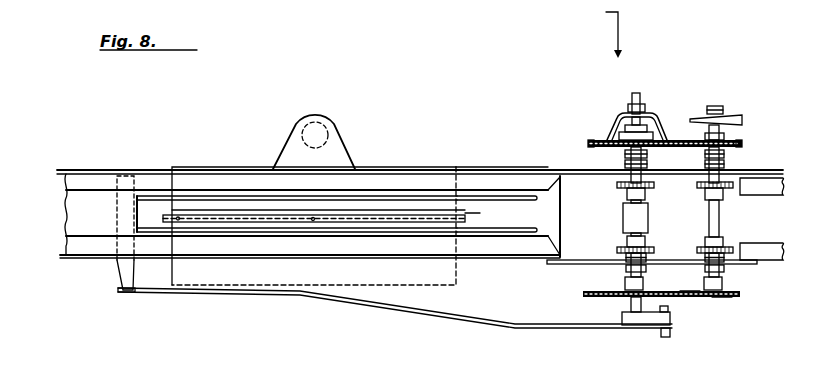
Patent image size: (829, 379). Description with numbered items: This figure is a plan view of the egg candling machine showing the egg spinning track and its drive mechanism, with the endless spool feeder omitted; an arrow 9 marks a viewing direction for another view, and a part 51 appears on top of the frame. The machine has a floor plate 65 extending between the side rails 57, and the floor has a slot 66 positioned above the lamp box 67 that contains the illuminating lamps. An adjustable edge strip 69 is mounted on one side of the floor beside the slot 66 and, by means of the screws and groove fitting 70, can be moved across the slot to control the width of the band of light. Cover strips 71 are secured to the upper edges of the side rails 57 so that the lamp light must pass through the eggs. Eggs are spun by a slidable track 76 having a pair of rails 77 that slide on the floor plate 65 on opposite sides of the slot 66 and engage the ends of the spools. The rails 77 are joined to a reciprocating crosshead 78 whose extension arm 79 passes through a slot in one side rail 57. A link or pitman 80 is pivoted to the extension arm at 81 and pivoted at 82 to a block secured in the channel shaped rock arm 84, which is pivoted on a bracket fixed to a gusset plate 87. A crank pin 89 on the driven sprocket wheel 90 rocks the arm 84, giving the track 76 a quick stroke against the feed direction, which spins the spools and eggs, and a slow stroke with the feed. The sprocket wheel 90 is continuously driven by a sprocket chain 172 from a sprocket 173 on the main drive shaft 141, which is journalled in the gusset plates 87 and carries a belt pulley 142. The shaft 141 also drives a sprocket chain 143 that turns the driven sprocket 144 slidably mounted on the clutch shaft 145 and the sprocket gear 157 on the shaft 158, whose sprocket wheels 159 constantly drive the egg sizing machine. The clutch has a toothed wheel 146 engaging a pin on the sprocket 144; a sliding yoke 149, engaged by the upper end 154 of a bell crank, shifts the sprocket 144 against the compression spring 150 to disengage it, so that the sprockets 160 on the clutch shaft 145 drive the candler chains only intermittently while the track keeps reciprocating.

The section line indicator 9 is at (607, 32).
The lifting lug 51 is at (364, 162).
The side rails 57 is at (103, 170).
The floor plate 65 is at (479, 213).
The slot 66 is at (416, 211).
The lamp box 67 is at (360, 291).
The adjustable edge strip 69 is at (266, 222).
The screws and groove fitting 70 is at (313, 219).
The cover strips 71 is at (98, 180).
The slidable track 76 is at (203, 195).
The rails 77 is at (517, 232).
The reciprocating crosshead 78 is at (128, 205).
The extension arm 79 is at (123, 275).
The link or pitman 80 is at (441, 322).
The pivot 81 is at (128, 293).
The pivot 82 is at (665, 338).
The rock arm 84 is at (640, 320).
The gusset plate 87 is at (577, 262).
The crank pin 89 is at (668, 309).
The driven sprocket wheel 90 is at (601, 299).
The main drive shaft 141 is at (742, 121).
The pulley 142 is at (723, 112).
The sprocket chain 143 is at (672, 140).
The driven sprocket 144 is at (590, 141).
The clutch shaft 145 is at (638, 95).
The toothed wheel 146 is at (613, 134).
The sliding yoke 149 is at (627, 126).
The compression spring 150 is at (624, 160).
The upper end of bell crank 154 is at (645, 107).
The sprocket gear 157 is at (742, 144).
The shaft 158 is at (720, 222).
The sprocket wheels 159 is at (727, 184).
The sprockets 160 is at (615, 185).
The sprocket chain 172 is at (691, 291).
The sprocket 173 is at (722, 298).